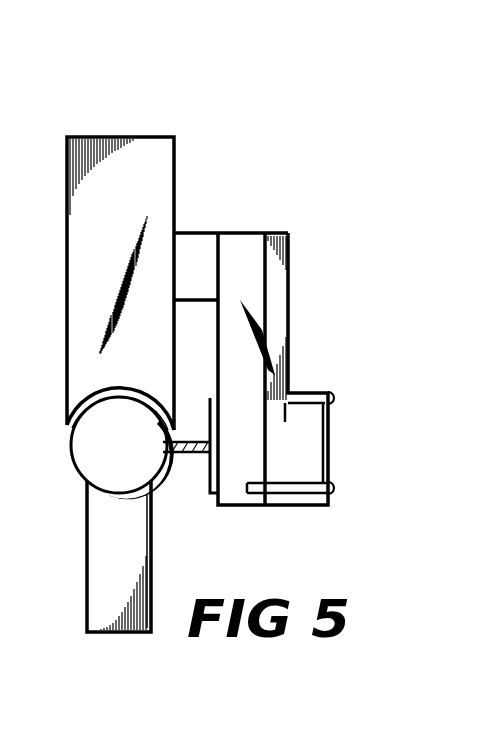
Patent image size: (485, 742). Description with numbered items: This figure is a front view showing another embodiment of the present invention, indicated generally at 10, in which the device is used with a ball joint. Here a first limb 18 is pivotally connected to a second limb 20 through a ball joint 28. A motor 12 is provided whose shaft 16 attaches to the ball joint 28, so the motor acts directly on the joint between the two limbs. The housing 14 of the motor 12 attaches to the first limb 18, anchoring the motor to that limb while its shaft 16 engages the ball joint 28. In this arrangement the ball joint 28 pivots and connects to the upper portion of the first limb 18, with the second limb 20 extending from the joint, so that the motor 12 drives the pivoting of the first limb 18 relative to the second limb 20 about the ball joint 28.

The embodiment of the present invention 10 is at (137, 72).
The motor 12 is at (287, 303).
The housing 14 is at (246, 240).
The shaft 16 is at (174, 455).
The first limb 18 is at (72, 244).
The second limb 20 is at (98, 551).
The ball joint 28 is at (92, 449).